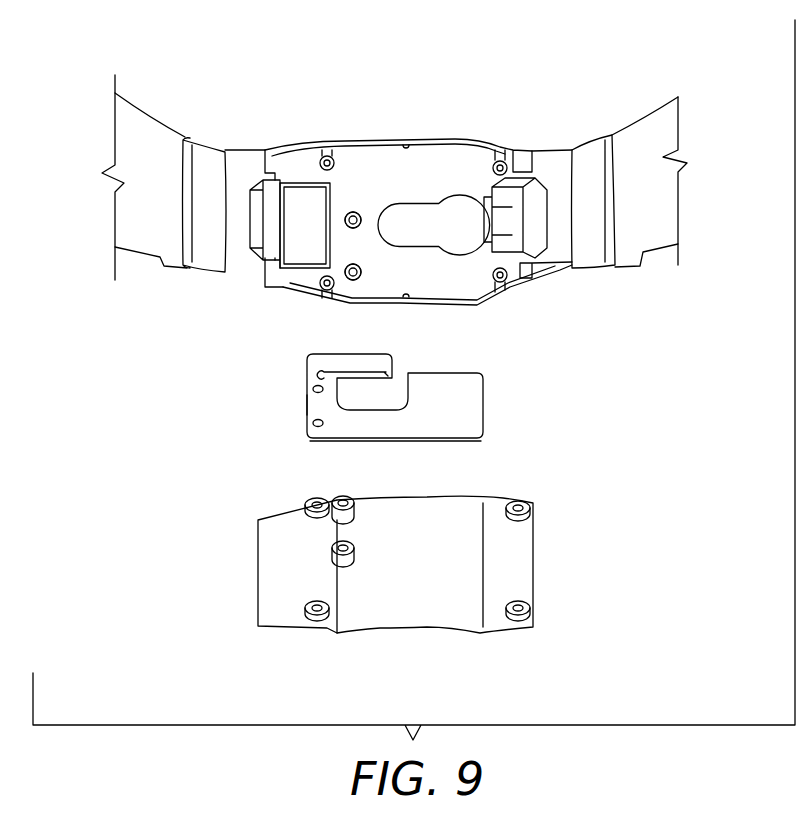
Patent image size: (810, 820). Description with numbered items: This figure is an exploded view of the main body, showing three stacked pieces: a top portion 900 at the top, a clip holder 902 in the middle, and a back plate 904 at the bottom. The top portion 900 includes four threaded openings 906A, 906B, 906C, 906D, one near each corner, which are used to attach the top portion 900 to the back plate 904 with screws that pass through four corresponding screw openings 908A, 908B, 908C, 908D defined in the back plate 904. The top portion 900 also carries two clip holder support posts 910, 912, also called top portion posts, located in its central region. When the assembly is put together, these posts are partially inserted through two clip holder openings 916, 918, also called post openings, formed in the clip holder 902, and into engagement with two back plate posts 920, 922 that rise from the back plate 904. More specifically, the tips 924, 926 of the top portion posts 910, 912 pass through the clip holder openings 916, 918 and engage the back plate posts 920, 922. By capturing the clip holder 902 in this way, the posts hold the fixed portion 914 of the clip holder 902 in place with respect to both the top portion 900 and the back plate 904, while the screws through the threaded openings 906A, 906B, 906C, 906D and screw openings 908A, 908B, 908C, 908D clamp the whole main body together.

The top portion 900 is at (508, 148).
The clip holder 902 is at (490, 412).
The back plate 904 is at (255, 547).
The threaded opening 906A is at (319, 155).
The threaded opening 906B is at (493, 160).
The threaded opening 906C is at (512, 283).
The threaded opening 906D is at (320, 289).
The screw opening 908A is at (305, 500).
The screw opening 908B is at (524, 501).
The screw opening 908C is at (527, 602).
The screw opening 908D is at (317, 614).
The clip holder support post 910 is at (355, 210).
The clip holder support post 912 is at (366, 282).
The fixed portion 914 is at (313, 406).
The clip holder opening 916 is at (312, 386).
The clip holder opening 918 is at (313, 424).
The back plate post 920 is at (346, 497).
The back plate post 922 is at (335, 551).
The tip 924 is at (361, 213).
The tip 926 is at (352, 282).